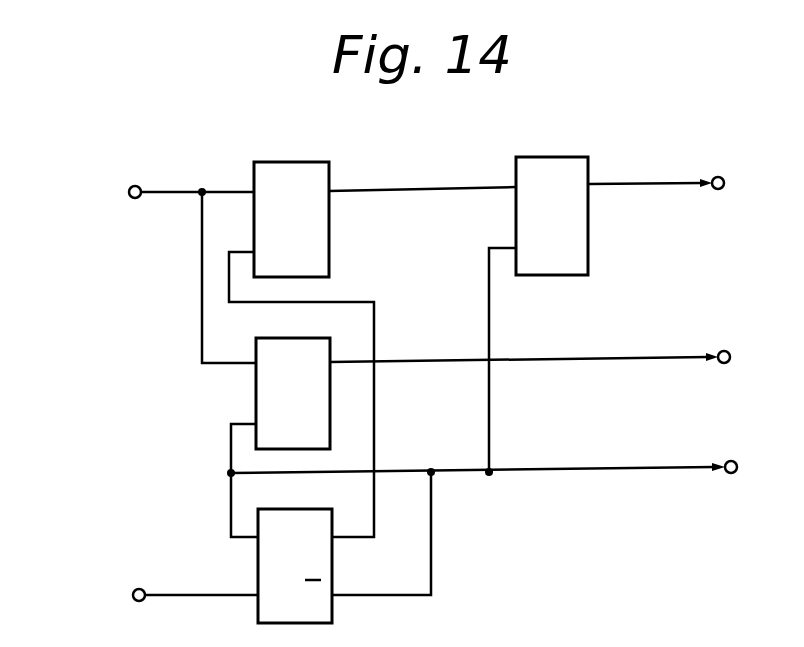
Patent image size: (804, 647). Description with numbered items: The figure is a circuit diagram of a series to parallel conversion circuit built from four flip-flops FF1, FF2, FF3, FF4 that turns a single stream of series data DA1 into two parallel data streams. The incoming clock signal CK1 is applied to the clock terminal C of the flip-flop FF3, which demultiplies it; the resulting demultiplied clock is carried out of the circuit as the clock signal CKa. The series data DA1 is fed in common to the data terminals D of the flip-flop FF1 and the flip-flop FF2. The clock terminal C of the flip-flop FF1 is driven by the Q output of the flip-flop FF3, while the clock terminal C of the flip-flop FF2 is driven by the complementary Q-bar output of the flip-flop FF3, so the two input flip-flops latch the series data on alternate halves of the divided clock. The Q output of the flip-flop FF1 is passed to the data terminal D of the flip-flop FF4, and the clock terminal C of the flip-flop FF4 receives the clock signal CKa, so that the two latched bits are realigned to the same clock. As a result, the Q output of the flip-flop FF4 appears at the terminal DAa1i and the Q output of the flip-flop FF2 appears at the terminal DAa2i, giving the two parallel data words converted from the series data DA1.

The flip-flop FF1 is at (291, 203).
The flip-flop FF2 is at (293, 377).
The flip-flop FF3 is at (295, 551).
The flip-flop FF4 is at (552, 200).
The series data DA1 is at (180, 274).
The clock signal CK1 is at (188, 615).
The data output DAa1i is at (674, 201).
The data output DAa2i is at (549, 374).
The clock signal CKa is at (494, 487).